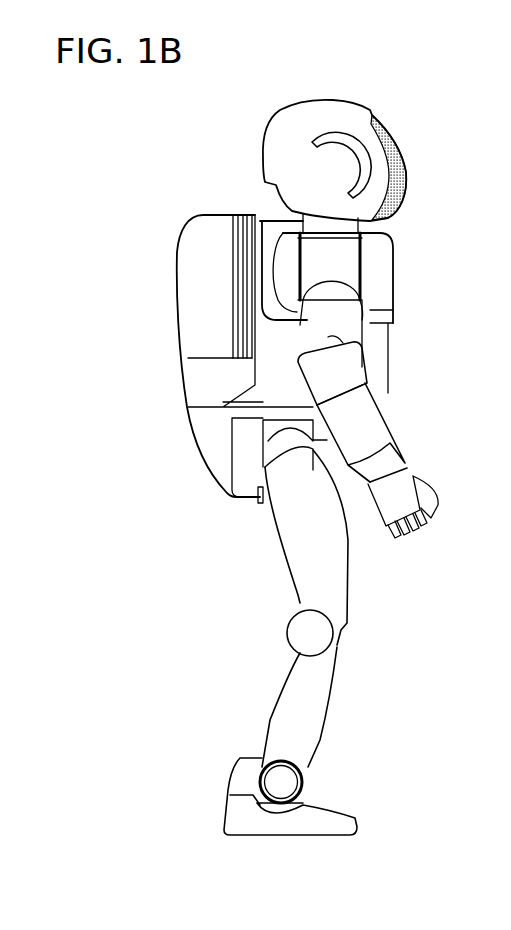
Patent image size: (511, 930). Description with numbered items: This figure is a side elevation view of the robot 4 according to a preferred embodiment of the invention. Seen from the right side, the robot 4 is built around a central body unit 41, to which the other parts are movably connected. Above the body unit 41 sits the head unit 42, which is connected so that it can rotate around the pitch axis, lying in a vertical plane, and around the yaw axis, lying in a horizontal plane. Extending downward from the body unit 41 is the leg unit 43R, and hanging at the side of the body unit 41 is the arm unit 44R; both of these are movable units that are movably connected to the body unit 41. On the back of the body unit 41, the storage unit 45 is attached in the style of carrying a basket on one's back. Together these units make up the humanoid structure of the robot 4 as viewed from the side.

The robot 4 is at (455, 114).
The body unit 41 is at (377, 355).
The head unit 42 is at (333, 100).
The leg unit 43R is at (350, 638).
The arm unit 44R is at (397, 424).
The storage unit 45 is at (222, 214).